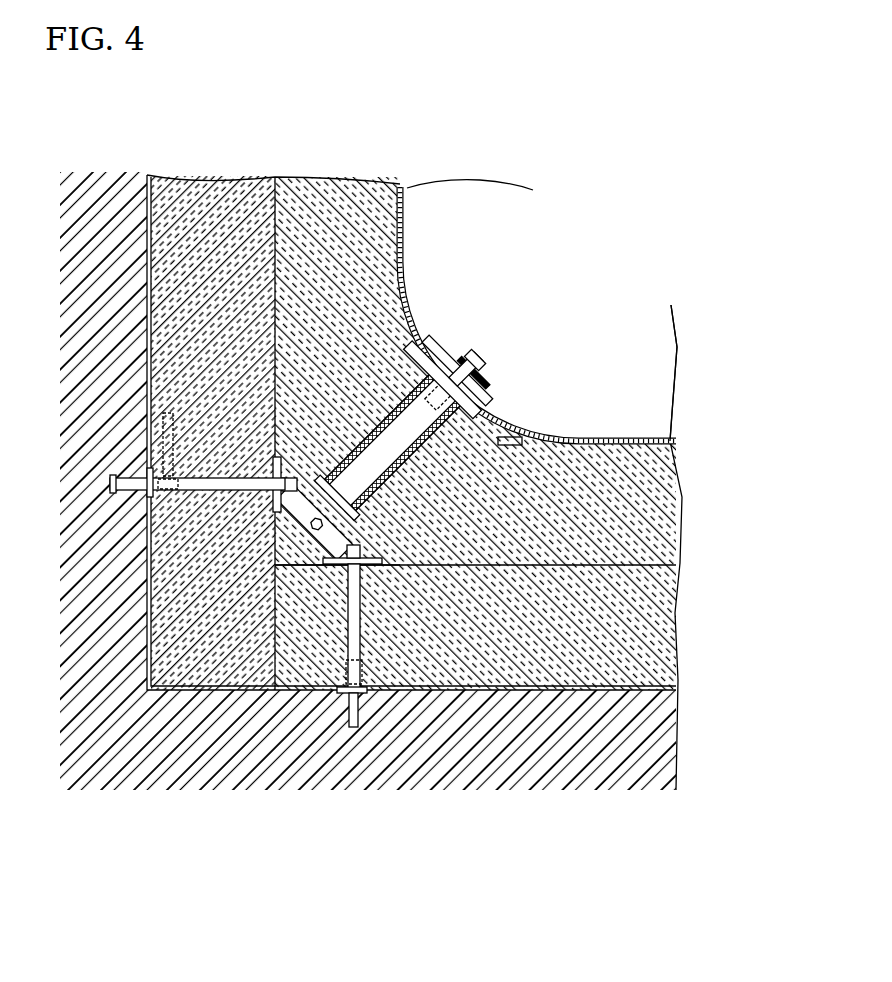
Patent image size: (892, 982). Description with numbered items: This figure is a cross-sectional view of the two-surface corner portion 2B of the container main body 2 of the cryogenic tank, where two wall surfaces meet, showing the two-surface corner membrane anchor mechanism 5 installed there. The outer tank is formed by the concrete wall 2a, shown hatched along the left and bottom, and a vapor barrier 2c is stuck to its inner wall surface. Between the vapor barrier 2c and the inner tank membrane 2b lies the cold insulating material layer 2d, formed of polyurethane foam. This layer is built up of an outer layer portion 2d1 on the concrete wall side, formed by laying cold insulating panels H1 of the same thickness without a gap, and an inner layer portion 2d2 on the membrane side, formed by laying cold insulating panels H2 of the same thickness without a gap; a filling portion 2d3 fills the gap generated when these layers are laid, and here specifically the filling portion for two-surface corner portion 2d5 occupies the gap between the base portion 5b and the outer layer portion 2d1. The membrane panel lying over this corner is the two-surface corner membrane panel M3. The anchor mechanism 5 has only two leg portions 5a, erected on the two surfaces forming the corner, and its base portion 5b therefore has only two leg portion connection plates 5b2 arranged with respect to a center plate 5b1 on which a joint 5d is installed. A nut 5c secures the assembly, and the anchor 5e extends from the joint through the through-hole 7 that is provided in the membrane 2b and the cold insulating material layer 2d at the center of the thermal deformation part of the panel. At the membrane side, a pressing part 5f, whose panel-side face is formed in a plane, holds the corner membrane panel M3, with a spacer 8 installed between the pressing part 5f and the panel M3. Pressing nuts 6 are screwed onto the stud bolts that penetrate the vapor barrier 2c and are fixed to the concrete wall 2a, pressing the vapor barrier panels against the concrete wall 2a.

The container main body 2 is at (117, 168).
The concrete wall 2a is at (97, 253).
The membrane 2b is at (479, 152).
The two-surface corner membrane panel M3 is at (407, 208).
The vapor barrier 2c is at (157, 566).
The cold insulating material layer 2d is at (279, 168).
The outer layer portion 2d1 is at (205, 222).
The inner layer portion 2d2 is at (352, 220).
The filling portion 2d3 is at (326, 696).
The filling portion for two-surface corner portion 2d5 is at (277, 548).
The two-surface corner portion 2B is at (618, 248).
The two-surface corner membrane anchor mechanism 5 is at (500, 324).
The leg portion 5a is at (213, 476).
The base portion 5b is at (335, 517).
The center plate 5b1 is at (285, 548).
The leg portion connection plate 5b2 is at (282, 470).
The nut 5c is at (300, 470).
The joint 5d is at (400, 482).
The anchor 5e is at (428, 350).
The pressing part 5f is at (480, 378).
The pressing nut 6 is at (168, 465).
The through-hole 7 is at (508, 445).
The spacer 8 is at (488, 400).
The cold insulating panel H1 is at (182, 343).
The cold insulating panel H2 is at (673, 500).